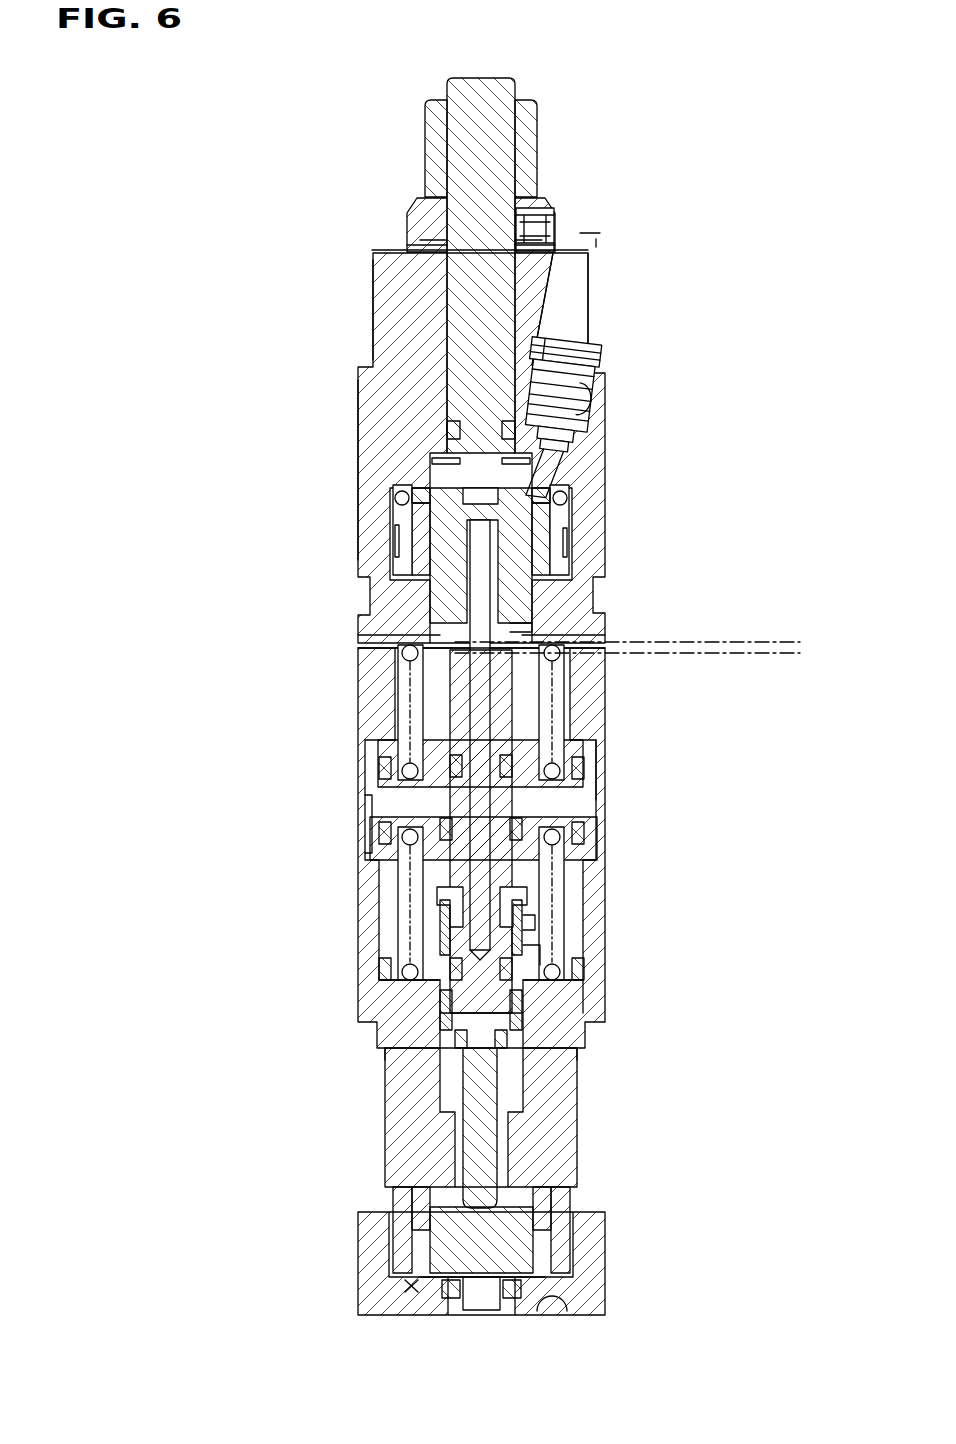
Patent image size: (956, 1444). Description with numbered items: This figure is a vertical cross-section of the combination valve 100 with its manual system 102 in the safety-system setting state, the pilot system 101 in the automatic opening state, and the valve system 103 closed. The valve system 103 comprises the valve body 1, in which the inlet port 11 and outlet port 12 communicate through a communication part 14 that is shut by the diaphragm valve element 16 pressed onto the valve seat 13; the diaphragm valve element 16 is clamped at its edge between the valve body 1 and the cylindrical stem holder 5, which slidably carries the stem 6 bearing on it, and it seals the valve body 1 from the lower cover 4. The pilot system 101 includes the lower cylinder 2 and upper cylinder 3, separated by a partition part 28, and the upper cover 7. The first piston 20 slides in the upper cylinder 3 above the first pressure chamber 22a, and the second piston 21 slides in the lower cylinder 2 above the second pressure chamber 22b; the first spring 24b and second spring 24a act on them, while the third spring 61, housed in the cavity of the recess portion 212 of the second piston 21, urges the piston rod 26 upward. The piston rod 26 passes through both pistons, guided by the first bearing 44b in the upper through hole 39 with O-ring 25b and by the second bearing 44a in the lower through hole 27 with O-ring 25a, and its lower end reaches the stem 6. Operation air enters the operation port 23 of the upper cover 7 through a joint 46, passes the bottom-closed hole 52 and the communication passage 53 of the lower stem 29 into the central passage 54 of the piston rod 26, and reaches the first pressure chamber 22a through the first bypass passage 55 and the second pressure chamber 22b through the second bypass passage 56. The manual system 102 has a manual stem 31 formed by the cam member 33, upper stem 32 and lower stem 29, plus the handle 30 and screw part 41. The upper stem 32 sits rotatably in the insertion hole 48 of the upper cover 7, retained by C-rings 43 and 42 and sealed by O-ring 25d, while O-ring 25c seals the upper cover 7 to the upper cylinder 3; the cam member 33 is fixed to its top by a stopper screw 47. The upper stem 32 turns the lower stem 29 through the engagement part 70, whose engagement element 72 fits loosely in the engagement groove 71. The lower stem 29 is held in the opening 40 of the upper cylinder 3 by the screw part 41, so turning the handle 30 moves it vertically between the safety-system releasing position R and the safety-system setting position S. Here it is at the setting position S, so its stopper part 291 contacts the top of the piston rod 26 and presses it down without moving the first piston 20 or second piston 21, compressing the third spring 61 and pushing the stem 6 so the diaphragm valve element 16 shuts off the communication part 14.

The combination valve 100 is at (306, 108).
The valve body 1 is at (368, 1268).
The lower cylinder 2 is at (417, 1003).
The upper cylinder 3 is at (363, 707).
The lower cover 4 is at (392, 1135).
The stem holder 5 is at (390, 1187).
The stem 6 is at (442, 1240).
The upper cover 7 is at (358, 428).
The inlet port 11 is at (473, 1298).
The outlet port 12 is at (548, 1303).
The valve seat 13 is at (450, 1298).
The communication part 14 is at (487, 1280).
The diaphragm valve element 16 is at (420, 1290).
The first piston 20 is at (565, 787).
The second piston 21 is at (572, 990).
The first pressure chamber 22a is at (388, 810).
The second pressure chamber 22b is at (452, 1030).
The operation port 23 is at (587, 386).
The second spring 24a is at (560, 888).
The first spring 24b is at (560, 692).
The O-ring 25a is at (447, 968).
The O-ring 25b is at (448, 690).
The O-ring 25c is at (395, 493).
The O-ring 25d is at (453, 405).
The piston rod 26 is at (485, 1075).
The lower through hole 27 is at (450, 1098).
The partition part 28 is at (582, 852).
The lower stem 29 is at (443, 570).
The stopper part 291 is at (527, 634).
The handle 30 is at (532, 113).
The manual stem 31 is at (524, 269).
The upper stem 32 is at (500, 303).
The cam member 33 is at (510, 140).
The upper through hole 39 is at (458, 624).
The opening 40 is at (428, 578).
The screw part 41 is at (537, 542).
The C-ring 42 is at (432, 463).
The C-ring 43 is at (437, 245).
The second bearing 44a is at (455, 1052).
The first bearing 44b is at (450, 727).
The joint 46 is at (598, 353).
The stopper screw 47 is at (537, 222).
The insertion hole 48 is at (453, 290).
The bottom-closed hole 52 is at (523, 478).
The communication passage 53 is at (480, 577).
The central passage 54 is at (475, 890).
The first bypass passage 55 is at (392, 847).
The second bypass passage 56 is at (435, 932).
The third spring 61 is at (540, 942).
The engagement part 70 is at (258, 555).
The engagement groove 71 is at (395, 543).
The engagement element 72 is at (410, 503).
The pilot system 101 is at (586, 733).
The manual system 102 is at (584, 232).
The valve system 103 is at (556, 1285).
The recess portion 212 is at (517, 933).
The safety-system releasing position R is at (763, 634).
The safety-system setting position S is at (763, 680).